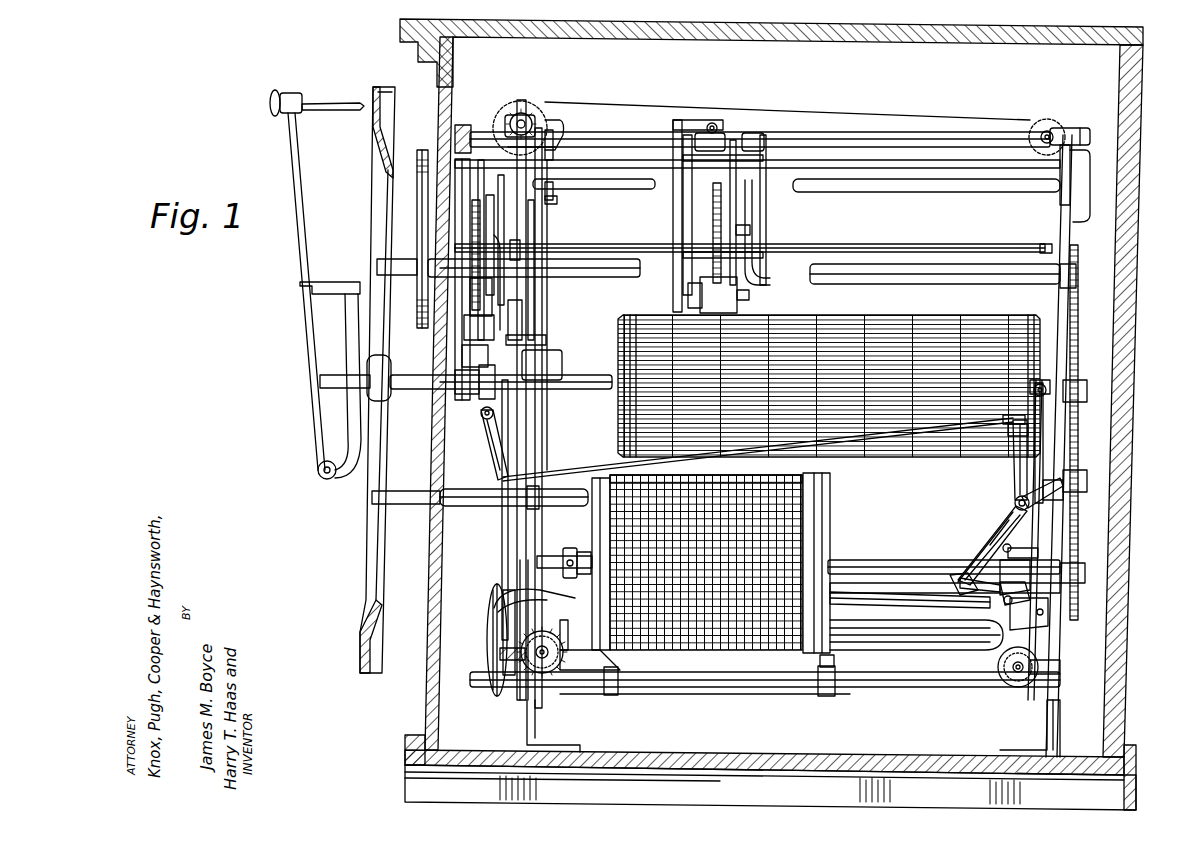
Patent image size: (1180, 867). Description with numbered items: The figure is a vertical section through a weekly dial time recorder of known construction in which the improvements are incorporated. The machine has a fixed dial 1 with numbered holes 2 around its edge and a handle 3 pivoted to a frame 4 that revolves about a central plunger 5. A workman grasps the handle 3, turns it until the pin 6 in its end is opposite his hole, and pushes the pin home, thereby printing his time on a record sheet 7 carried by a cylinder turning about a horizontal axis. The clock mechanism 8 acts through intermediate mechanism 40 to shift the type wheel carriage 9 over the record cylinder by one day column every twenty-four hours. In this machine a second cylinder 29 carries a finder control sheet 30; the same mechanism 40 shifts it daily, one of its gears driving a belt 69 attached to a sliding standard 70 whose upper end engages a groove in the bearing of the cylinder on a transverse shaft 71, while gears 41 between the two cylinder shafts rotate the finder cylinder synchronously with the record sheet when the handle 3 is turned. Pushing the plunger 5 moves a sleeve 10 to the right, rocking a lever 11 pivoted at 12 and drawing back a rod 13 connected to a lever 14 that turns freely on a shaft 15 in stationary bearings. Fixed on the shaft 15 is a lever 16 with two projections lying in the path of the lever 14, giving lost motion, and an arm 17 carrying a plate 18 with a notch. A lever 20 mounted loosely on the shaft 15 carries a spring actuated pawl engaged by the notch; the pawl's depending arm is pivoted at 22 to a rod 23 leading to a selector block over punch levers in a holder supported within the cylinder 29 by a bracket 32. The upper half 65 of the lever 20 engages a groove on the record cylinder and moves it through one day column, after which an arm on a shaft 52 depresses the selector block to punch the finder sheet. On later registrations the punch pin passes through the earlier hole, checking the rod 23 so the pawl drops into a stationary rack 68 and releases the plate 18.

The fixed dial 1 is at (368, 597).
The numbered holes 2 is at (378, 95).
The handle 3 is at (305, 252).
The frame 4 is at (345, 476).
The central plunger 5 is at (326, 386).
The pin 6 is at (352, 116).
The record sheet 7 is at (628, 355).
The clock mechanism 8 is at (462, 200).
The type wheel carriage 9 is at (724, 211).
The sleeve 10 is at (468, 396).
The lever 11 is at (494, 445).
The pivot 12 is at (481, 417).
The rod 13 is at (950, 452).
The lever 14 is at (1013, 503).
The shaft 15 is at (1032, 494).
The lever 16 is at (1014, 470).
The arm or lever 17 is at (1012, 522).
The plate 18 is at (995, 542).
The lever 20 is at (1020, 556).
The pivot 22 is at (1010, 608).
The rod or bar 23 is at (982, 600).
The cylinder 29 is at (826, 492).
The finder control sheet 30 is at (800, 542).
The bracket 32 is at (892, 612).
The intermediate mechanism 40 is at (527, 104).
The gears 41 is at (1079, 368).
The shaft 52 is at (935, 625).
The upper half of lever 65 is at (1045, 420).
The stationary rack 68 is at (1043, 614).
The belt 69 is at (832, 630).
The sliding standard 70 is at (505, 590).
The transverse shaft 71 is at (890, 565).